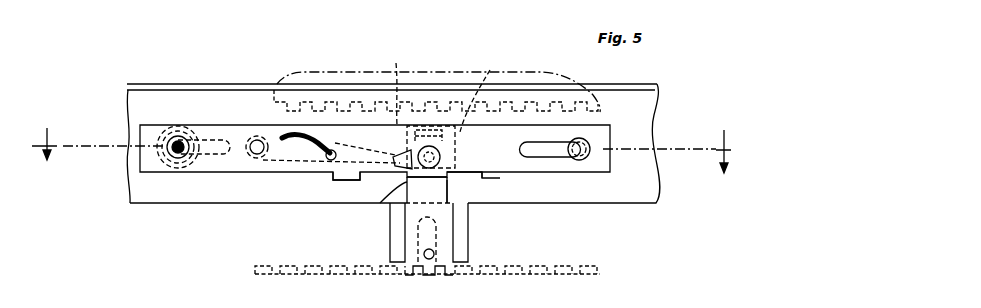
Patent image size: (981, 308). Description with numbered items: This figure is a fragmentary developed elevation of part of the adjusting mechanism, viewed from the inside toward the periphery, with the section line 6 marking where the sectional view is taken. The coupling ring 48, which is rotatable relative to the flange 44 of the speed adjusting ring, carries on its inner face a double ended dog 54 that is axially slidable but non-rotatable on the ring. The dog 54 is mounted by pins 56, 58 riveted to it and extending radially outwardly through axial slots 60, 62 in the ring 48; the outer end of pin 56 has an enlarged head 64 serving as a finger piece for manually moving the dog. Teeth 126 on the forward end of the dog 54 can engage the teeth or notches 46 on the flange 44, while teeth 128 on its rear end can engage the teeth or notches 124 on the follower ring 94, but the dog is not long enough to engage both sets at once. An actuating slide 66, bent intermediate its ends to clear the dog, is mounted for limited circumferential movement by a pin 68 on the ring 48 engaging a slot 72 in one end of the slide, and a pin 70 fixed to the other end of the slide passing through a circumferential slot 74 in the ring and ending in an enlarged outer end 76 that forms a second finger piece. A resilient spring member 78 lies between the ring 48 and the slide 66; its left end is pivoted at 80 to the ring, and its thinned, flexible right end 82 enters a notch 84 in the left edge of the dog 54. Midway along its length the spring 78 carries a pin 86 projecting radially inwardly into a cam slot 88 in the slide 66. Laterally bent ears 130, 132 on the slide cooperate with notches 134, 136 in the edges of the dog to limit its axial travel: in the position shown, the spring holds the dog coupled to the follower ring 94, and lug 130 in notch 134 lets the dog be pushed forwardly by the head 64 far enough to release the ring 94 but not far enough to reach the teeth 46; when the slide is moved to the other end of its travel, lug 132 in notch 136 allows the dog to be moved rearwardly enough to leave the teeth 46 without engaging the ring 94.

The section line 6- 6 is at (385, 150).
The flange of the speed adjusting ring 44 is at (575, 79).
The teeth or notches 46 is at (600, 110).
The coupling ring 48 is at (629, 197).
The double ended dog 54 is at (458, 224).
The pin 56 is at (447, 162).
The pin 58 is at (436, 254).
The axial slot 60 is at (450, 142).
The axial slot 62 is at (421, 228).
The enlarged head 64 is at (393, 86).
The actuating slide 66 is at (380, 172).
The pin 68 is at (576, 160).
The pin 70 is at (175, 133).
The slot 72 is at (540, 158).
The circumferential slot 74 is at (213, 138).
The enlarged outer end 76 is at (157, 132).
The resilient spring member 78 is at (326, 143).
The pivot 80 is at (255, 130).
The thinned end 82 is at (386, 158).
The notch 84 is at (427, 190).
The pin 86 is at (330, 160).
The cam slot 88 is at (303, 152).
The follower ring 94 is at (586, 268).
The teeth or notches 124 is at (515, 274).
The teeth 126 is at (460, 110).
The teeth 128 is at (428, 276).
The laterally bent ear 130 is at (479, 177).
The laterally bent ear 132 is at (343, 187).
The notch 134 is at (457, 191).
The notch 136 is at (391, 203).